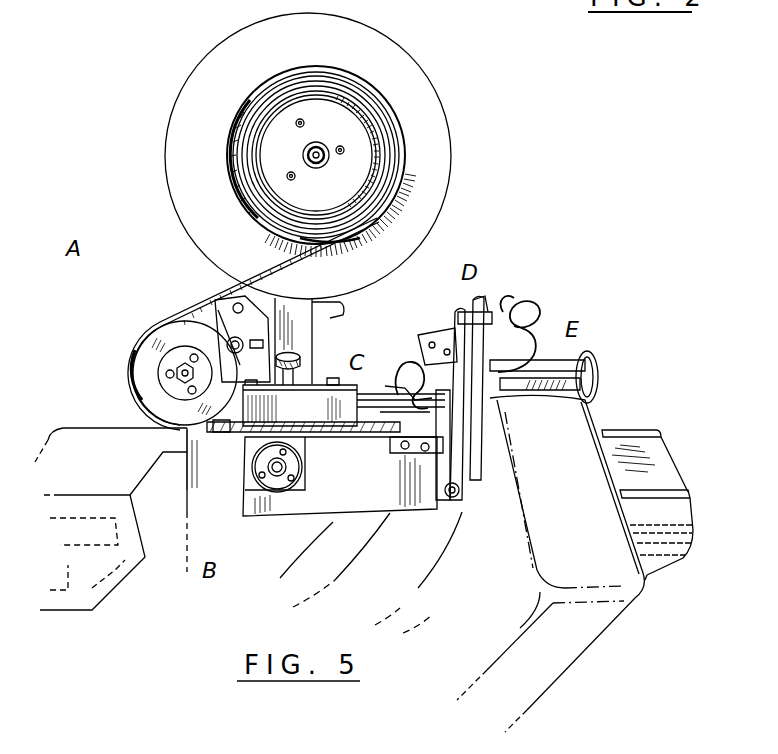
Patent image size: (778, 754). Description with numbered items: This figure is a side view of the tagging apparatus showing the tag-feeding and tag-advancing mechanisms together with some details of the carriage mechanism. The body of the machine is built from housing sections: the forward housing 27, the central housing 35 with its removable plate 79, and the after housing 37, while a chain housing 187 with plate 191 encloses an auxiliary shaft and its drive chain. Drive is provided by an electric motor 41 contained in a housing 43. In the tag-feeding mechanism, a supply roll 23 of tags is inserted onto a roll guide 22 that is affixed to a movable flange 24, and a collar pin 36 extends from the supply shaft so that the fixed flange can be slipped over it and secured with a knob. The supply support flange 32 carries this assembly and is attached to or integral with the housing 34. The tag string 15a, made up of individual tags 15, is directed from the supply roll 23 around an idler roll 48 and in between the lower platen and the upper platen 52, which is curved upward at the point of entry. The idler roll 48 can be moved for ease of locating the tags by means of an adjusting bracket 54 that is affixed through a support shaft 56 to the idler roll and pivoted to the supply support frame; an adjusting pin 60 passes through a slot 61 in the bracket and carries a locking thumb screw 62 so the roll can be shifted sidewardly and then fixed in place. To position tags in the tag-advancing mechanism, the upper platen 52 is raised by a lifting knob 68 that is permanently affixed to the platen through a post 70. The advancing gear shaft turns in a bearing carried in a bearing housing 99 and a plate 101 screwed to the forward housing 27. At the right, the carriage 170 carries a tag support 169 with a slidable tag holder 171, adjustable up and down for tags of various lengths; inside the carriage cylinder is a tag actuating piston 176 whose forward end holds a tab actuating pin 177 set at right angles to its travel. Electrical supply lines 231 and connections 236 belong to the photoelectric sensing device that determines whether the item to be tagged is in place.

The tag 15 is at (340, 476).
The tag string 15a is at (190, 312).
The roll guide 22 is at (380, 162).
The supply roll 23 is at (398, 122).
The movable flange 24 is at (415, 205).
The forward housing 27 is at (350, 572).
The supply support flange 32 is at (346, 303).
The housing 34 is at (322, 382).
The central housing 35 is at (612, 577).
The collar pin 36 is at (321, 151).
The after housing 37 is at (663, 458).
The electric motor 41 is at (67, 612).
The motor housing 43 is at (85, 595).
The idler roll 48 is at (175, 338).
The upper platen 52 is at (218, 432).
The adjusting bracket 54 is at (242, 339).
The support shaft 56 is at (177, 367).
The adjusting pin 60 is at (230, 340).
The slot 61 is at (251, 359).
The locking thumb screw 62 is at (220, 313).
The lifting knob 68 is at (300, 358).
The post 70 is at (300, 402).
The removable plate 79 is at (647, 578).
The bearing housing 99 is at (302, 452).
The plate 101 is at (290, 472).
The tag support 169 is at (428, 337).
The carriage 170 is at (503, 311).
The slidable tag holder 171 is at (433, 327).
The tag actuating piston 176 is at (460, 312).
The tab actuating pin 177 is at (483, 302).
The chain housing 187 is at (582, 355).
The plate 191 is at (596, 368).
The electrical supply lines 231 is at (405, 366).
The connections 236 is at (540, 303).